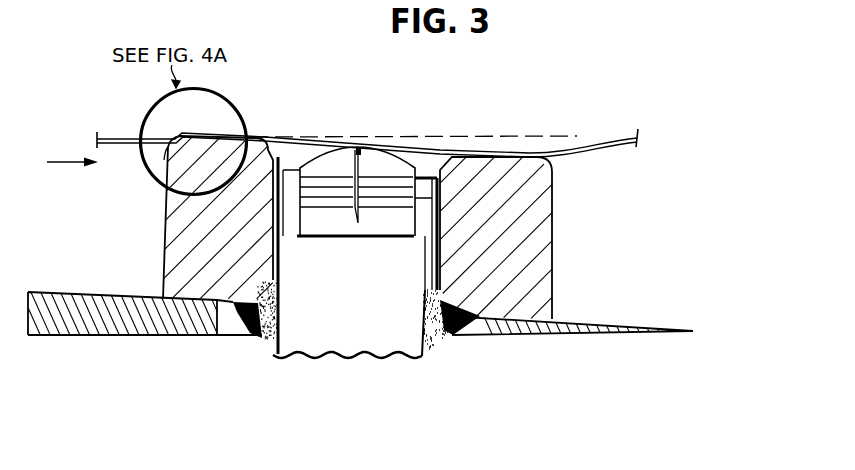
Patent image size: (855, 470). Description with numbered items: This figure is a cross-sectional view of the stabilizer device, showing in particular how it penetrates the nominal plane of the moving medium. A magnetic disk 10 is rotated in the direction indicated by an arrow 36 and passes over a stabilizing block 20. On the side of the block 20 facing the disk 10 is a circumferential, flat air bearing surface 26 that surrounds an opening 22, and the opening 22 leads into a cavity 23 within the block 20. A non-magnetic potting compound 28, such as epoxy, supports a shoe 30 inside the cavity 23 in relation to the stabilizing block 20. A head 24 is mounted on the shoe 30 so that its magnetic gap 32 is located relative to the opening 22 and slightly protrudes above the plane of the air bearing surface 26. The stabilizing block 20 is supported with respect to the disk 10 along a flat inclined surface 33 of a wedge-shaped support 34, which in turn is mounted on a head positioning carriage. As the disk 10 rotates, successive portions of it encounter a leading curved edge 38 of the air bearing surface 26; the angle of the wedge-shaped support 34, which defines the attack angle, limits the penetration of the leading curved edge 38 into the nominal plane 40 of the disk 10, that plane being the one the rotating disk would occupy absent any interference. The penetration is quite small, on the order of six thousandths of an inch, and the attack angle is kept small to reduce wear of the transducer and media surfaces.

The magnetic disk 10 is at (117, 138).
The stabilizing block 20 is at (540, 265).
The opening 22 is at (266, 150).
The cavity 23 is at (279, 254).
The head 24 is at (385, 162).
The air bearing surface 26 is at (530, 153).
The potting compound 28 is at (252, 324).
The shoe 30 is at (310, 335).
The magnetic gap 32 is at (363, 147).
The inclined surface 33 is at (97, 293).
The wedge-shaped support 34 is at (140, 325).
The arrow 36 is at (63, 170).
The leading curved edge 38 is at (162, 176).
The nominal plane 40 is at (458, 133).